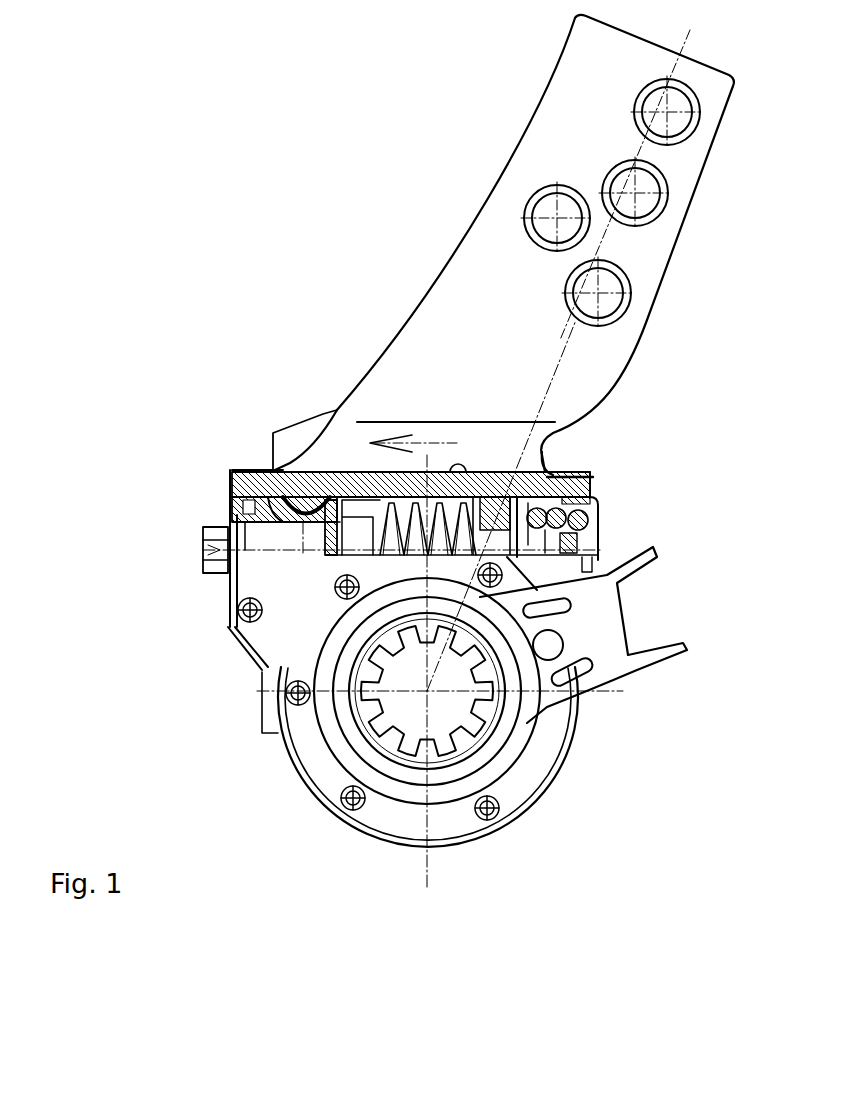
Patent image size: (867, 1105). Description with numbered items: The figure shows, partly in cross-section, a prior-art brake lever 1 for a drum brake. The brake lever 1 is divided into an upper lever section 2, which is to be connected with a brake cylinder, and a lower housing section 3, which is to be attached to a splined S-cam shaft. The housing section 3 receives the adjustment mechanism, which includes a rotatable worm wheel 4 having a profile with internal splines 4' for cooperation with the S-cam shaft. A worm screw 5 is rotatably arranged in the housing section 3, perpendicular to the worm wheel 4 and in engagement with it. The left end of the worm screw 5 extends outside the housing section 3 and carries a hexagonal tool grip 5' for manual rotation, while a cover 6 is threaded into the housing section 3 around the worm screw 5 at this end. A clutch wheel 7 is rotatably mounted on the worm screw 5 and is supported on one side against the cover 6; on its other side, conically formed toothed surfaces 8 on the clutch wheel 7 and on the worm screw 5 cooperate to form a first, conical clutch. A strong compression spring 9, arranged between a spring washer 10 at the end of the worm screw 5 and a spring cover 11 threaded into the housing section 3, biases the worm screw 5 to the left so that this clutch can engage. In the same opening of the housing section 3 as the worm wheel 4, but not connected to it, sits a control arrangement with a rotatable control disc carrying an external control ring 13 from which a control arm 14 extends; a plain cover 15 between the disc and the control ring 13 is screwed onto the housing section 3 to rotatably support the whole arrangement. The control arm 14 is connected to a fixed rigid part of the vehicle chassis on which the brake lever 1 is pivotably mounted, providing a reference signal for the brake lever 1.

The brake lever 1 is at (288, 255).
The upper lever section 2 is at (555, 107).
The lower housing section 3 is at (442, 645).
The worm wheel 4 is at (455, 772).
The internal splines 4' is at (478, 744).
The worm screw 5 is at (411, 395).
The hexagonal tool grip 5' is at (162, 515).
The cover 6 is at (232, 472).
The clutch wheel 7 is at (293, 500).
The toothed surfaces 8 is at (324, 512).
The compression spring 9 is at (590, 497).
The spring washer 10 is at (547, 477).
The spring cover 11 is at (605, 518).
The control ring 13 is at (515, 735).
The control arm 14 is at (613, 657).
The plain cover 15 is at (320, 765).